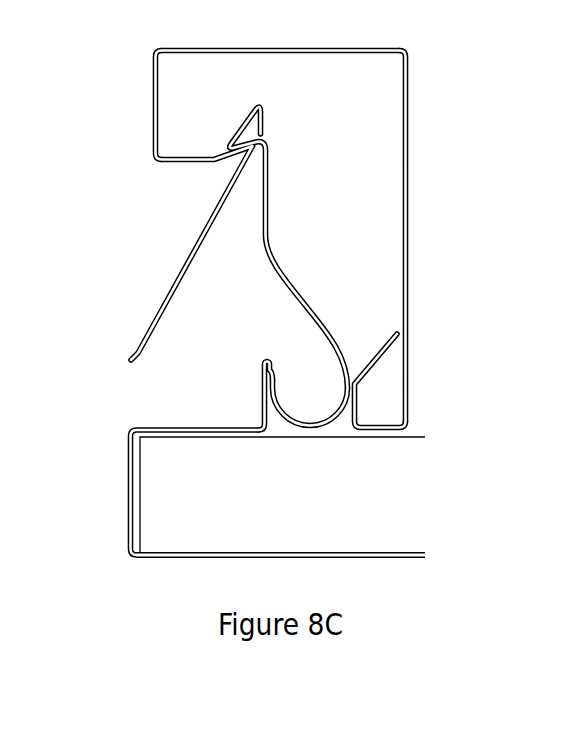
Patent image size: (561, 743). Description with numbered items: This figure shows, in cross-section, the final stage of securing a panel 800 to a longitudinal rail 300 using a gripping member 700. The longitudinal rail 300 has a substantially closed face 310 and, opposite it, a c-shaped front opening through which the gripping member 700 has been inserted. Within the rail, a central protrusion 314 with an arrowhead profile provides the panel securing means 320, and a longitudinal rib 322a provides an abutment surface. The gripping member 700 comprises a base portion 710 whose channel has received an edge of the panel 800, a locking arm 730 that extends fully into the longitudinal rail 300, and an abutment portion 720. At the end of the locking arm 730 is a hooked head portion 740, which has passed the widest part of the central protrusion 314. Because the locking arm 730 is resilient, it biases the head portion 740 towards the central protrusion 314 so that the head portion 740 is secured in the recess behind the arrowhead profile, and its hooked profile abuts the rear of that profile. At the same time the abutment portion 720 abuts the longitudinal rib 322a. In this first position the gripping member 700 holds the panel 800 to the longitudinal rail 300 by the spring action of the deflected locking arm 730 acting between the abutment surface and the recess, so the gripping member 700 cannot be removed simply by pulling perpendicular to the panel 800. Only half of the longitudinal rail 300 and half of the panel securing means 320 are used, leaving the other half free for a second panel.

The longitudinal rail 300 is at (277, 216).
The substantially closed face 310 is at (267, 48).
The central protrusion 314 is at (178, 311).
The panel securing means 320 is at (157, 253).
The longitudinal rib 322a is at (378, 393).
The gripping member 700 is at (242, 398).
The base portion 710 is at (172, 507).
The abutment portion 720 is at (329, 423).
The locking arm 730 is at (273, 252).
The head portion 740 is at (258, 119).
The panel 800 is at (292, 507).